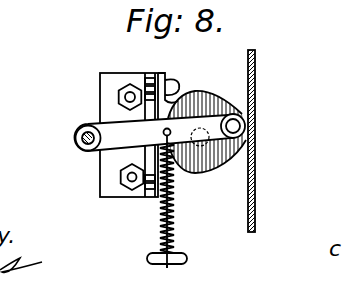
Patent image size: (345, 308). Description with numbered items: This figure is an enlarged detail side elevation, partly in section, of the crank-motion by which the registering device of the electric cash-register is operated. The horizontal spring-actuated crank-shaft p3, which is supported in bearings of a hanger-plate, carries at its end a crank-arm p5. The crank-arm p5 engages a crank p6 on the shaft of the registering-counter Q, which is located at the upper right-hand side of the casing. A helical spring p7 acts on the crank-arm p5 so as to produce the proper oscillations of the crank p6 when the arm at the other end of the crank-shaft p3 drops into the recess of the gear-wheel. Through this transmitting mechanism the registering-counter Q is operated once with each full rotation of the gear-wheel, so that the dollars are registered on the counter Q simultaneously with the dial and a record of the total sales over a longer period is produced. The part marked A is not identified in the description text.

The plate A is at (255, 188).
The registering-counter Q is at (235, 105).
The crank-shaft p3 is at (76, 139).
The crank-arm p5 is at (154, 133).
The crank p6 is at (213, 170).
The helical spring p7 is at (163, 222).